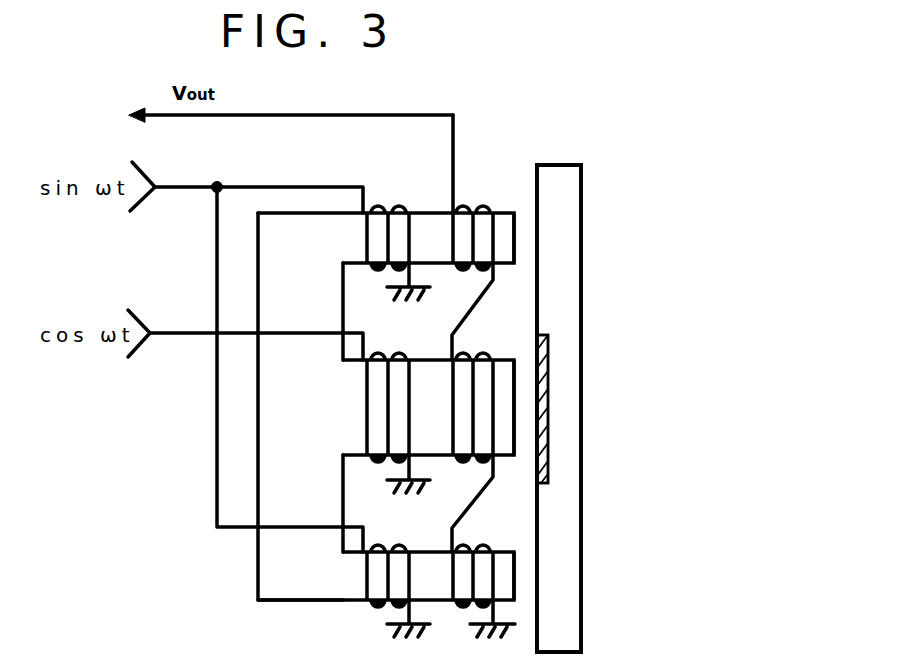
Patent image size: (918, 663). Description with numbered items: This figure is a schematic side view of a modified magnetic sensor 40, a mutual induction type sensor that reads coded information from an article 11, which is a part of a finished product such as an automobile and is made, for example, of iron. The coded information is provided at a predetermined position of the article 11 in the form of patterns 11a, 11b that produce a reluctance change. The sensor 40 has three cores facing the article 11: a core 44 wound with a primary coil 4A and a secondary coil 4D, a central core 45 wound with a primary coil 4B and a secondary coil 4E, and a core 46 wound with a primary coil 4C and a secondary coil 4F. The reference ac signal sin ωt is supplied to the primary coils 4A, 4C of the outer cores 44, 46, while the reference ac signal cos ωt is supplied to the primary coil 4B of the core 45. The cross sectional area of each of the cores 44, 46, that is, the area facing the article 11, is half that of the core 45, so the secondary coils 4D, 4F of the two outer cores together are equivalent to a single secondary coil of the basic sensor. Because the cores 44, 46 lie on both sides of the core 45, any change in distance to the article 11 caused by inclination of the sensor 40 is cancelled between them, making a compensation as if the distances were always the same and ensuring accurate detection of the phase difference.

The magnetic sensor 40 is at (495, 166).
The core 44 is at (433, 213).
The core 45 is at (433, 360).
The core 46 is at (433, 550).
The primary coil 4A is at (391, 223).
The primary coil 4B is at (391, 394).
The primary coil 4C is at (391, 562).
The secondary coil 4D is at (483, 223).
The secondary coil 4E is at (483, 394).
The secondary coil 4F is at (483, 562).
The article 11 is at (562, 165).
The pattern 11a is at (550, 408).
The pattern 11b is at (542, 409).